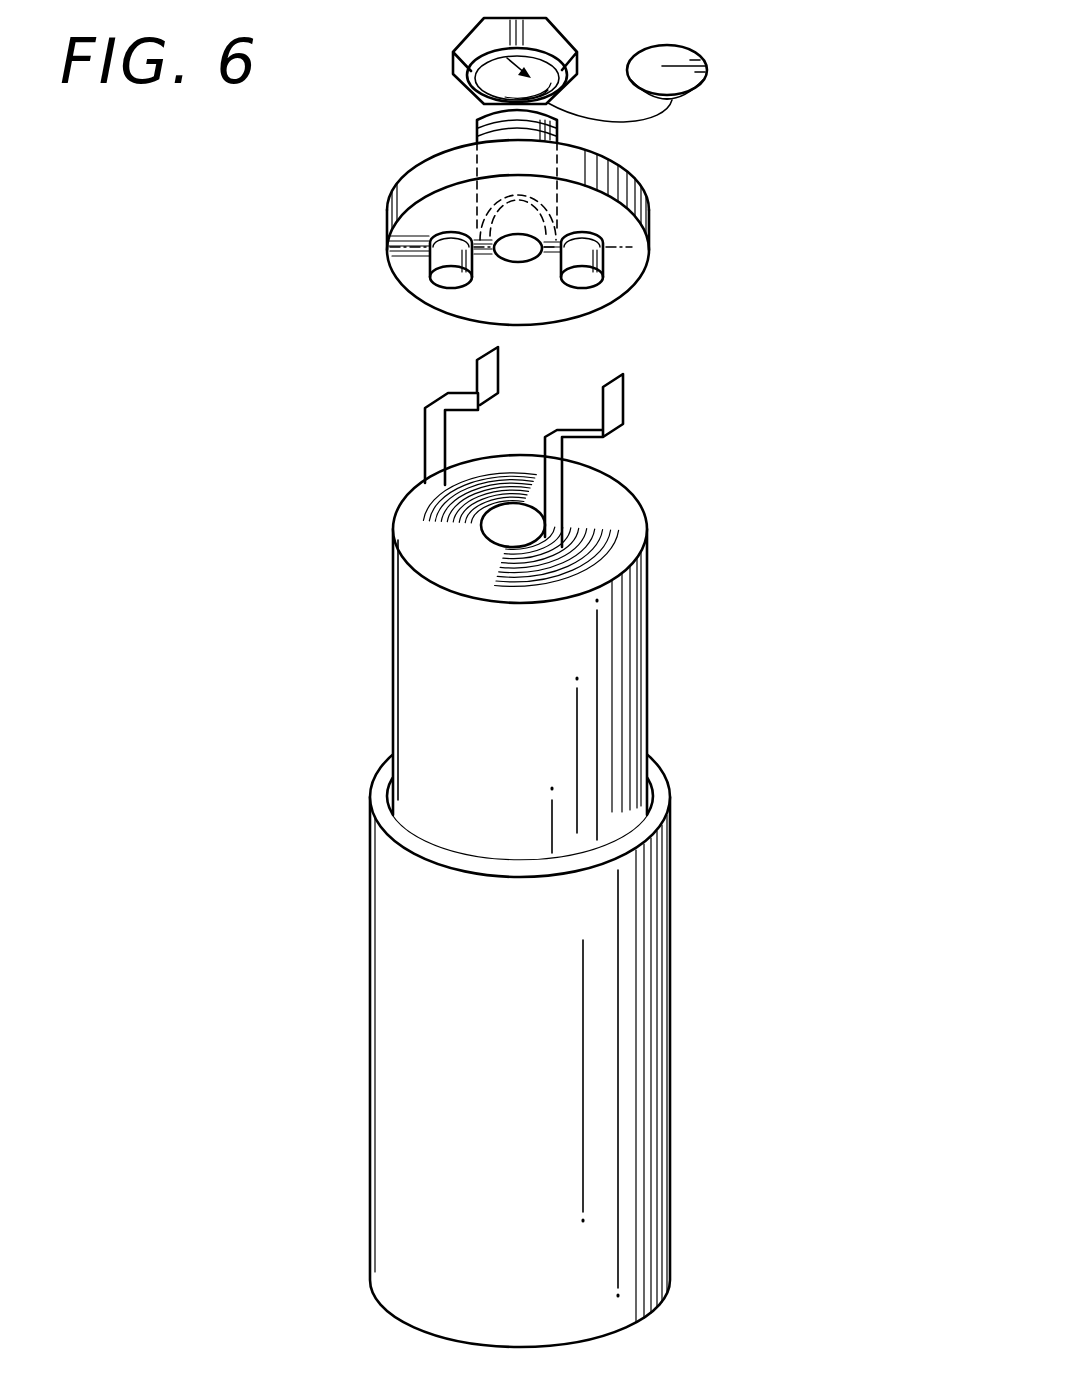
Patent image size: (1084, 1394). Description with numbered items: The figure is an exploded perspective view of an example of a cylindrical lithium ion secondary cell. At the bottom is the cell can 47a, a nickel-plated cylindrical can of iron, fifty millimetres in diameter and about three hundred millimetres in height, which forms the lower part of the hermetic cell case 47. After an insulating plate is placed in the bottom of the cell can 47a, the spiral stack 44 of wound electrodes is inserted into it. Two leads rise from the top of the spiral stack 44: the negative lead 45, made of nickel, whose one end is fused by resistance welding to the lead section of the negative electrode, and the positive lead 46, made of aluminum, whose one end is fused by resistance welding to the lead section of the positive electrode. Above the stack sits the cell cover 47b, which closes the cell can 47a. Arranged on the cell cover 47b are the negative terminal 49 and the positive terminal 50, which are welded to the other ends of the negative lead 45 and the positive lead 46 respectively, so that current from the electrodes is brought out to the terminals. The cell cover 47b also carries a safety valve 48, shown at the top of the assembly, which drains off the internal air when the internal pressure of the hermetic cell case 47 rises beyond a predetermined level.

The spiral stack 44 is at (617, 652).
The negative lead 45 is at (610, 392).
The positive lead 46 is at (472, 378).
The hermetic cell case 47 is at (677, 1082).
The cell can 47a is at (645, 883).
The cell cover 47b is at (647, 200).
The safety valve 48 is at (460, 122).
The negative terminal 49 is at (602, 260).
The positive terminal 50 is at (428, 264).